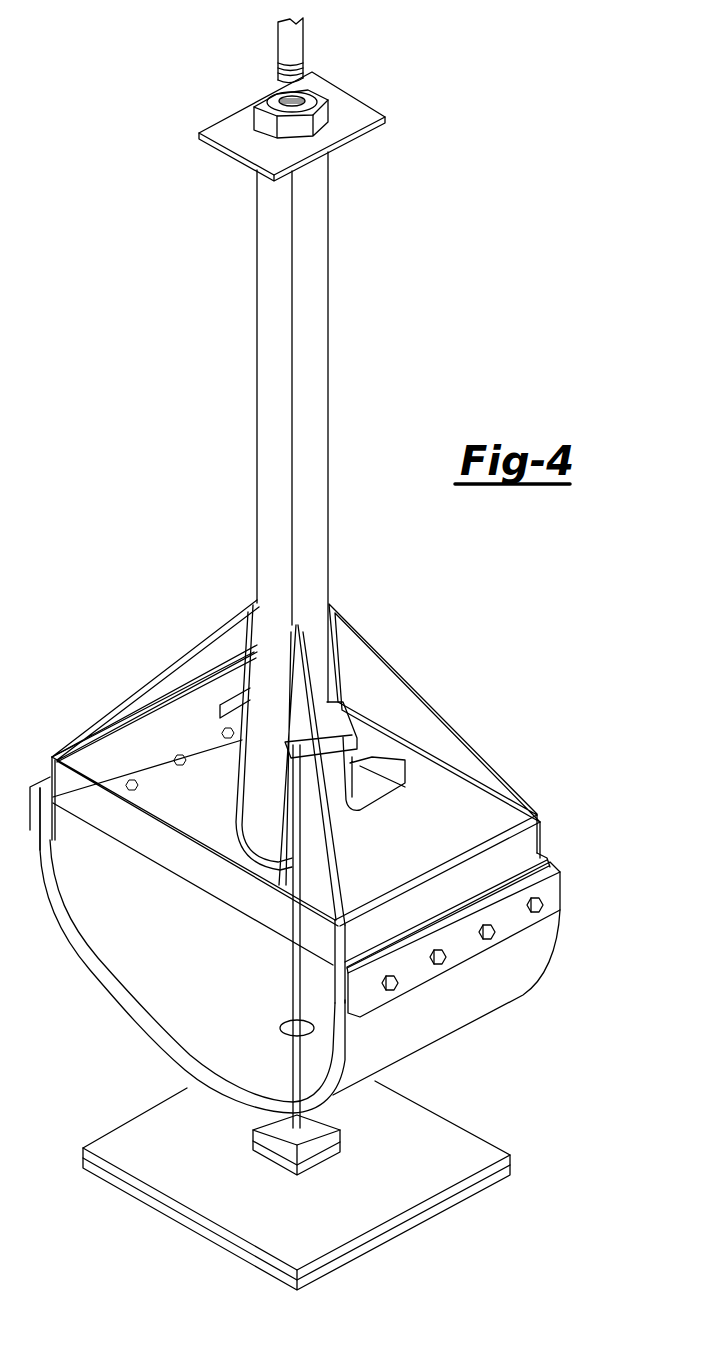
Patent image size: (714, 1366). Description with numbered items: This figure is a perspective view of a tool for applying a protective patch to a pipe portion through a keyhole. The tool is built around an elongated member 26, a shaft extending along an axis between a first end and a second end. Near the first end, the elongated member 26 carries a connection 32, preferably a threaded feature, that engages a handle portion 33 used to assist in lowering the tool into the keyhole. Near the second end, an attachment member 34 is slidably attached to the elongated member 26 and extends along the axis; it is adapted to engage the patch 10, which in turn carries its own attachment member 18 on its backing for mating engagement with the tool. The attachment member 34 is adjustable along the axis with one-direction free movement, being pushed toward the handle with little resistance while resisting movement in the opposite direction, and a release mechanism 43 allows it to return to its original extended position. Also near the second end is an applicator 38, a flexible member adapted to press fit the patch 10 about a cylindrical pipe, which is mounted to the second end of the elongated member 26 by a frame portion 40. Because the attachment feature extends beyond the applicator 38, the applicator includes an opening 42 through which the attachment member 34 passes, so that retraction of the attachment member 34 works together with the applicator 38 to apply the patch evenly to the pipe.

The patch 10 is at (493, 1094).
The attachment member 18 is at (303, 1138).
The elongated member 26 is at (318, 230).
The connection 32 is at (418, 115).
The handle portion 33 is at (296, 43).
The attachment member 34 is at (297, 970).
The applicator 38 is at (540, 946).
The frame portion 40 is at (483, 812).
The opening 42 is at (272, 1017).
The release mechanism 43 is at (414, 732).